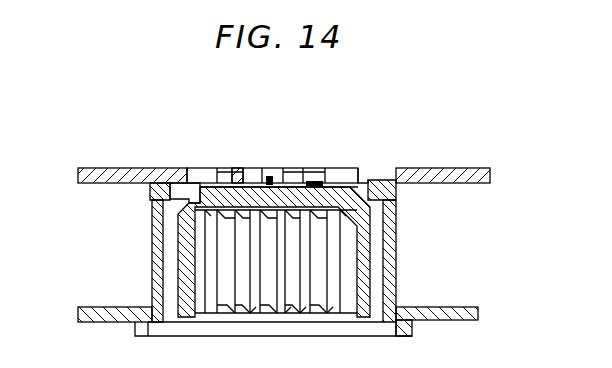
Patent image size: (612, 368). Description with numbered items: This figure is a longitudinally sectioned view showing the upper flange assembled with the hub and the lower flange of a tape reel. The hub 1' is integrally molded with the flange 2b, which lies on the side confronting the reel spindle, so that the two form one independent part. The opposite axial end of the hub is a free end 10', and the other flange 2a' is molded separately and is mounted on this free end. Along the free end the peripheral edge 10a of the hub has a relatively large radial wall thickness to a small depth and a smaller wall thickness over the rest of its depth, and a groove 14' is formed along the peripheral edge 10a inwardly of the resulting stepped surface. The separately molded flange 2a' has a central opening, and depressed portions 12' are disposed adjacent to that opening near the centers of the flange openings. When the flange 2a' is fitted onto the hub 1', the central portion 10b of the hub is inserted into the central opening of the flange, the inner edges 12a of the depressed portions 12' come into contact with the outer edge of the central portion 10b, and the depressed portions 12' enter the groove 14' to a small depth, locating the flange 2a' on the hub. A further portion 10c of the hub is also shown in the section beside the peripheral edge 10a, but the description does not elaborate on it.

The hub 1' is at (255, 268).
The separately molded flange 2a' is at (284, 146).
The flange 2b is at (462, 307).
The free end of the hub 10' is at (277, 148).
The peripheral edge of the hub 10a is at (388, 190).
The central portion of the hub 10b is at (313, 181).
The housing cover side wall 10c is at (390, 214).
The depressed portions 12' is at (135, 213).
The inner edges of the depressed portions 12a is at (201, 198).
The groove 14' is at (313, 252).